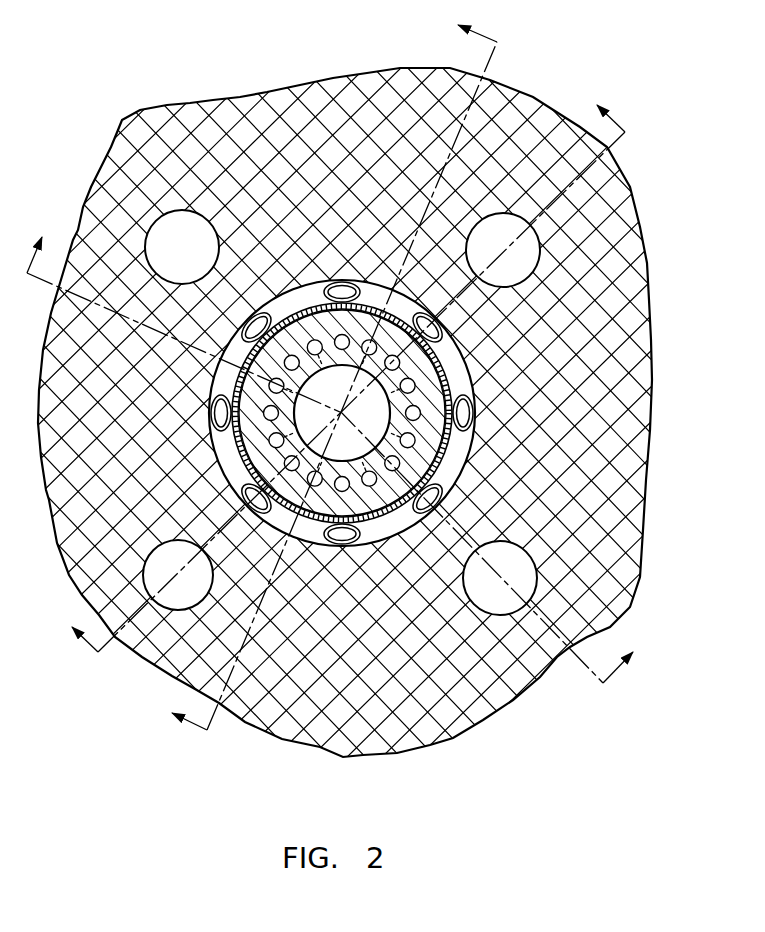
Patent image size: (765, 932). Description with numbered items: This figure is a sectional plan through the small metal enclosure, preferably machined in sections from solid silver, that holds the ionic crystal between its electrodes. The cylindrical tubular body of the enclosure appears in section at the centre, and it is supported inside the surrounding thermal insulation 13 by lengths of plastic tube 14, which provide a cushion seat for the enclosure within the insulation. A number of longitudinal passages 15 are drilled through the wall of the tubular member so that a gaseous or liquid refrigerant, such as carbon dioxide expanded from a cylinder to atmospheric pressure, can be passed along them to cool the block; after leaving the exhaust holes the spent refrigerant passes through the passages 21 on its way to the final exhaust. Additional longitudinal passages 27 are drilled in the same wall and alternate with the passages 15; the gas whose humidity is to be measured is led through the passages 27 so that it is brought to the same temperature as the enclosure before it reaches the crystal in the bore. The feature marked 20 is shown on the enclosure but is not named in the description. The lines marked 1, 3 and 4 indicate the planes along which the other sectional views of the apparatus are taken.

The thermal insulation 13 is at (490, 735).
The lengths of plastic tube 14 is at (330, 282).
The longitudinal passages 15 is at (245, 388).
The outer flange ring 20 is at (413, 300).
The passages 21 is at (156, 237).
The additional longitudinal passages 27 is at (386, 316).
The section line 1- 1 is at (336, 448).
The section line 3- 3 is at (338, 369).
The section line 4- 4 is at (324, 370).